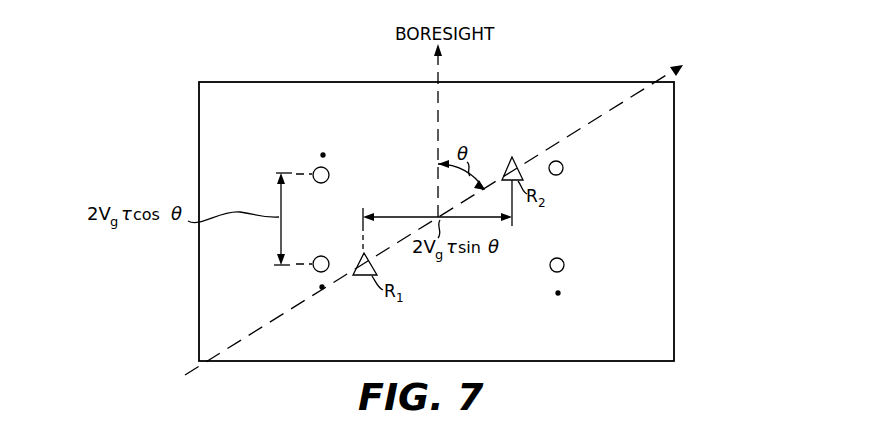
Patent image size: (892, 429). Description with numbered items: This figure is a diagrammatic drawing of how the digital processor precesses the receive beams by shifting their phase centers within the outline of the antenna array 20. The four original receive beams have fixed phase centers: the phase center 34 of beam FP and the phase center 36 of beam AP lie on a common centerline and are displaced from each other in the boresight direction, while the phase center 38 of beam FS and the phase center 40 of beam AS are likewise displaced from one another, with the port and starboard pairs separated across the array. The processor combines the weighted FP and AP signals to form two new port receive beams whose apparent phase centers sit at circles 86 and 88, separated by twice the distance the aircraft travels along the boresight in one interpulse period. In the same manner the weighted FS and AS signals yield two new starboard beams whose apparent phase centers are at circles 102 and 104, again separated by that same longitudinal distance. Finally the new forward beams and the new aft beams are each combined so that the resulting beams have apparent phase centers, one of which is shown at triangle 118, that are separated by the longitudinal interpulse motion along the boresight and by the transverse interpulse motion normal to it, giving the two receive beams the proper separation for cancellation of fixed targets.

The broadside array 20 is at (675, 222).
The phase center of beam FP 34 is at (323, 154).
The phase center of beam AP 36 is at (322, 288).
The phase center of beam FS 38 is at (550, 152).
The phase center of beam AS 40 is at (558, 294).
The phase center circle 86 is at (329, 174).
The phase center circle 88 is at (317, 271).
The phase center circle 102 is at (560, 174).
The phase center circle 104 is at (563, 268).
The phase center triangle 118 is at (507, 159).